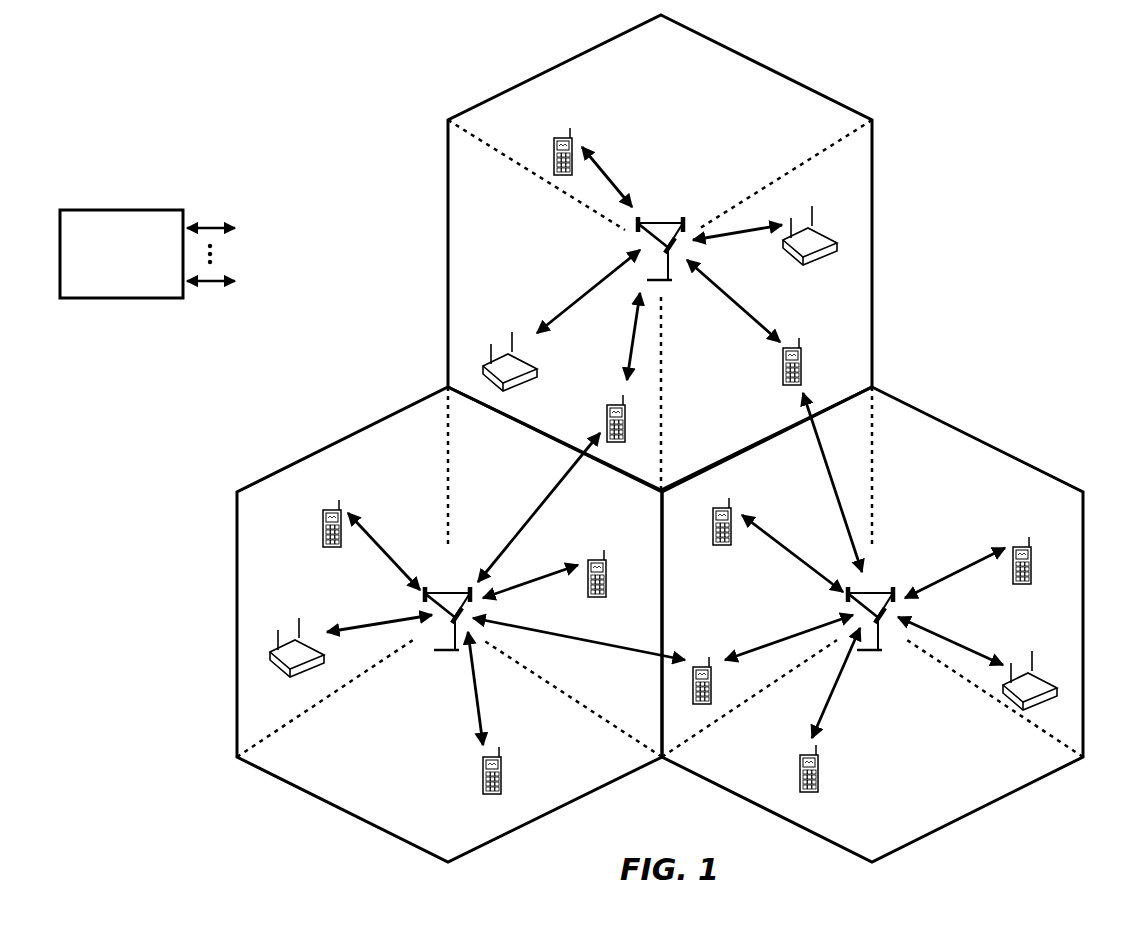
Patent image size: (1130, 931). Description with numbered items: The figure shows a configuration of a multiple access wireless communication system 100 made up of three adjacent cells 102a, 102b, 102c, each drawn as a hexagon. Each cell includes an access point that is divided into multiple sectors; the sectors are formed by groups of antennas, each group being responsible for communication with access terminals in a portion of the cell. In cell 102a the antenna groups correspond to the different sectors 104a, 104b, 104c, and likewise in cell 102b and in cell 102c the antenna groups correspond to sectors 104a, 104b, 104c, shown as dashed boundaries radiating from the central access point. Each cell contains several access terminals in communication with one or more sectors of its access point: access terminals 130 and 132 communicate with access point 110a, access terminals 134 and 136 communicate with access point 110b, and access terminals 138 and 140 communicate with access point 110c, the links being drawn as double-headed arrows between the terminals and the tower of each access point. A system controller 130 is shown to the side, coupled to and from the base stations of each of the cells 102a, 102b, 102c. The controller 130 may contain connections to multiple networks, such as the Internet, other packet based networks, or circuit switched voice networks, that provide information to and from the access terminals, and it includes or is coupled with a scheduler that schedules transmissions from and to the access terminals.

The multiple access wireless communication system 100 is at (1018, 80).
The cell 102a is at (996, 70).
The cell 102b is at (340, 440).
The cell 102c is at (990, 430).
The sector 104a is at (641, 271).
The sector 104b is at (676, 487).
The sector 104c is at (659, 590).
The access point 110a is at (662, 222).
The access point 110b is at (455, 580).
The access point 110c is at (872, 592).
The controller 130 is at (118, 210).
The access terminal 132 is at (826, 230).
The access terminal 134 is at (323, 521).
The access terminal 136 is at (280, 655).
The access terminal 138 is at (713, 519).
The access terminal 140 is at (1040, 673).